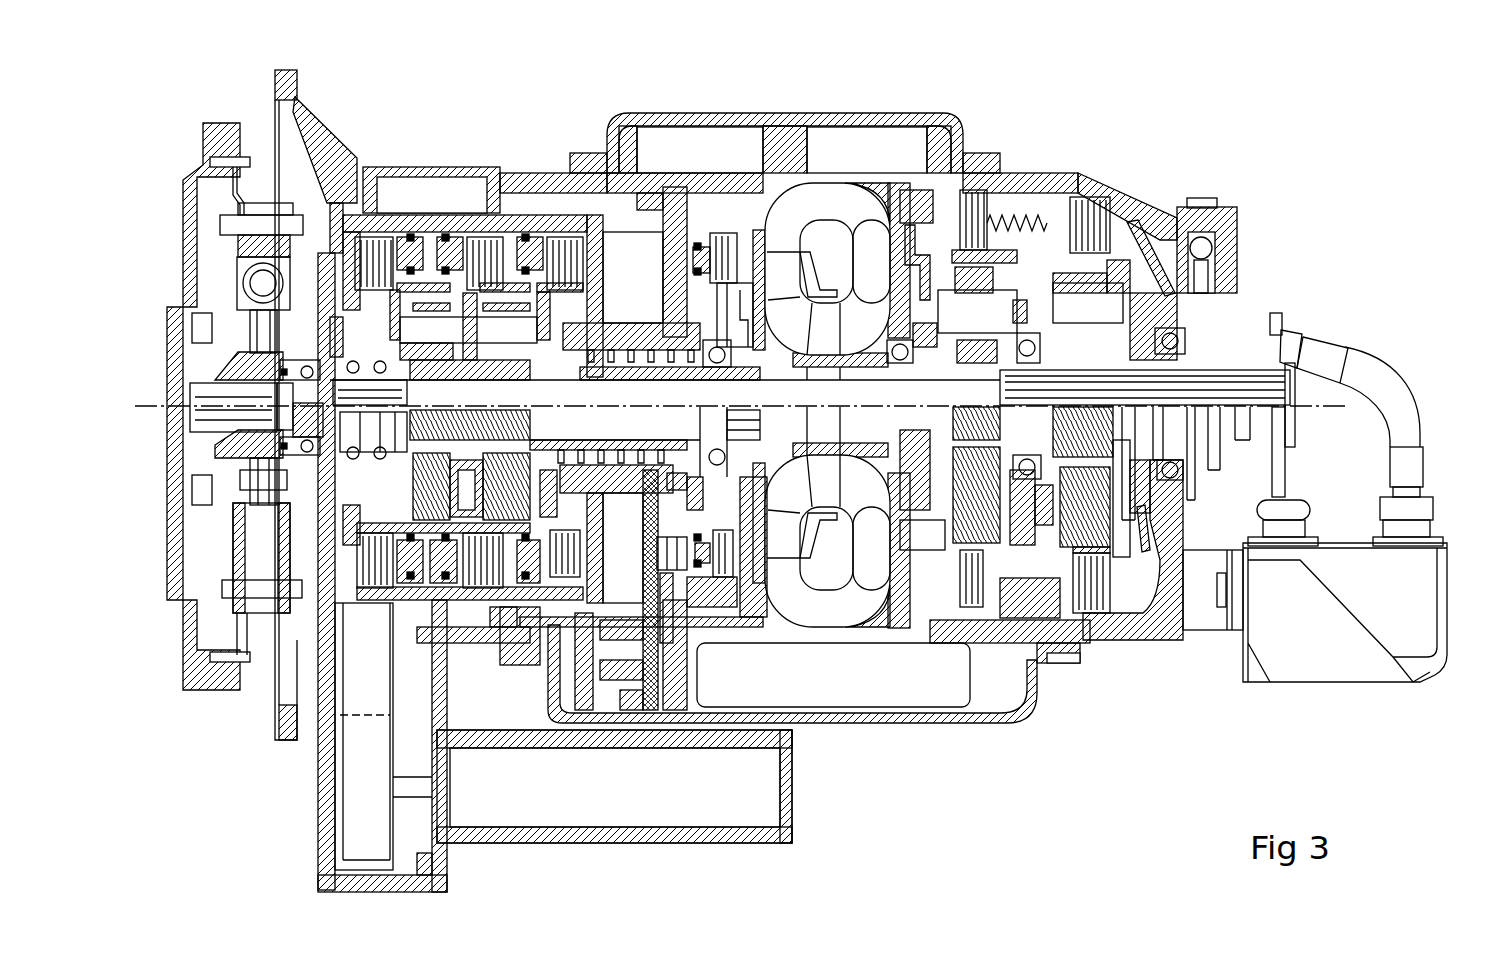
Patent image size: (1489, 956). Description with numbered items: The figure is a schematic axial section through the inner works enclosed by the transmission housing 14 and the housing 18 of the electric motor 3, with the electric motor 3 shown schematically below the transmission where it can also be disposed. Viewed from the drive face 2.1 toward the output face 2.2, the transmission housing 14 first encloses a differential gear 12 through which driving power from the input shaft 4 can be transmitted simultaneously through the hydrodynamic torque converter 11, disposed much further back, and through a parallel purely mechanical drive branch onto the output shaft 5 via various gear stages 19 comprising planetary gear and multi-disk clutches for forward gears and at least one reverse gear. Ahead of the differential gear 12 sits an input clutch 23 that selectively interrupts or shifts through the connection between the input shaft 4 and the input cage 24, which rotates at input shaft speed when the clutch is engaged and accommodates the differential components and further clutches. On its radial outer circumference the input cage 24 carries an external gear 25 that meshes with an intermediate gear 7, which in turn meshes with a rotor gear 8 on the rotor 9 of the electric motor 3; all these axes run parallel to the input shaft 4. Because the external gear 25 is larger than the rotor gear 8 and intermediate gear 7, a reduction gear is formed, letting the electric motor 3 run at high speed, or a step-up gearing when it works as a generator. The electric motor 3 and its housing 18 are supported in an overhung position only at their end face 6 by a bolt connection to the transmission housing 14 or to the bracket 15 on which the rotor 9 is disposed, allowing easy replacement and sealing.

The drive face 2.1 is at (270, 698).
The output face 2.2 is at (1240, 267).
The electric motor 3 is at (712, 810).
The input shaft 4 is at (207, 427).
The output shaft 5 is at (1297, 423).
The end face 6 is at (423, 813).
The intermediate gear 7 is at (357, 692).
The rotor gear 8 is at (353, 802).
The rotor 9 is at (423, 787).
The hydrodynamic torque converter 11 is at (827, 207).
The differential gear 12 is at (432, 212).
The transmission housing 14 is at (430, 170).
The bracket 15 is at (323, 773).
The housing 18 is at (613, 833).
The gear stages 19 is at (490, 240).
The input clutch 23 is at (397, 250).
The input cage 24 is at (567, 213).
The external gear 25 is at (371, 205).